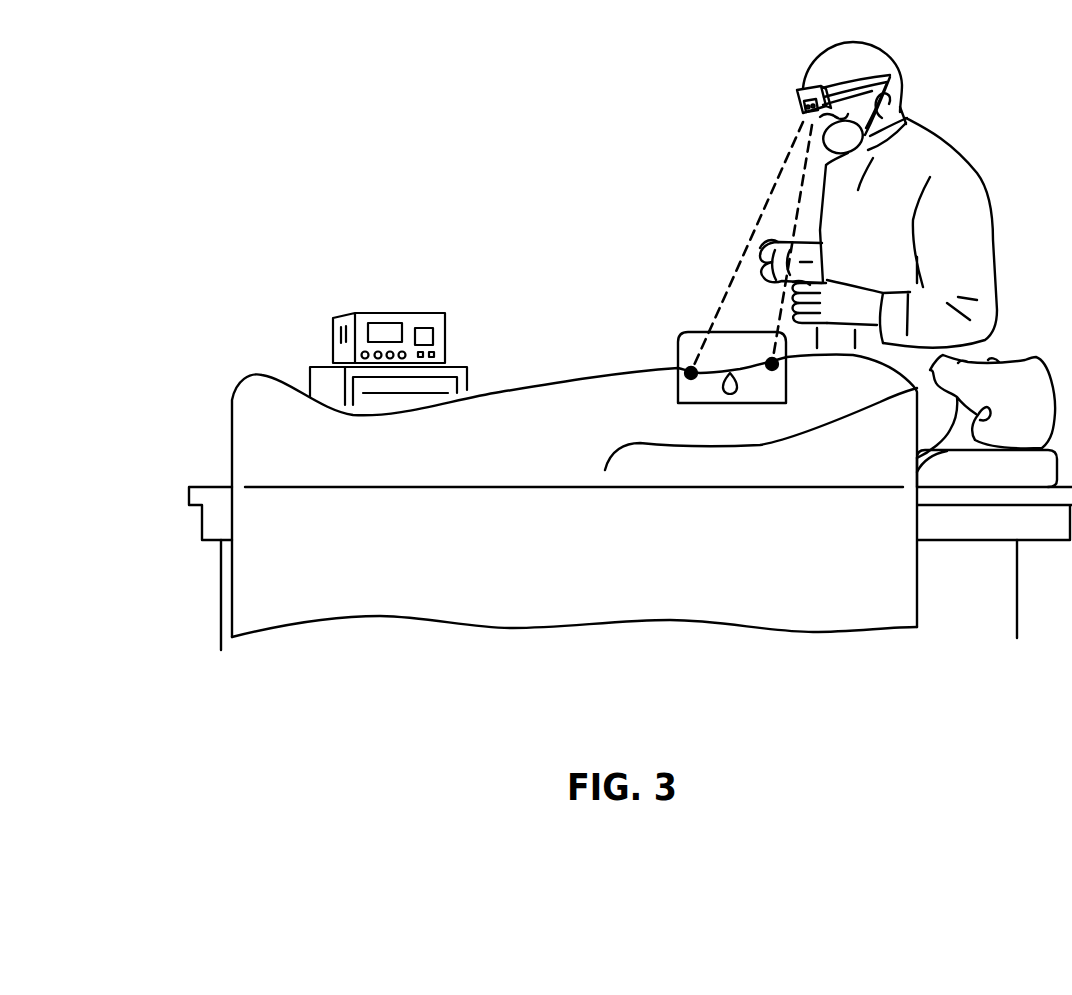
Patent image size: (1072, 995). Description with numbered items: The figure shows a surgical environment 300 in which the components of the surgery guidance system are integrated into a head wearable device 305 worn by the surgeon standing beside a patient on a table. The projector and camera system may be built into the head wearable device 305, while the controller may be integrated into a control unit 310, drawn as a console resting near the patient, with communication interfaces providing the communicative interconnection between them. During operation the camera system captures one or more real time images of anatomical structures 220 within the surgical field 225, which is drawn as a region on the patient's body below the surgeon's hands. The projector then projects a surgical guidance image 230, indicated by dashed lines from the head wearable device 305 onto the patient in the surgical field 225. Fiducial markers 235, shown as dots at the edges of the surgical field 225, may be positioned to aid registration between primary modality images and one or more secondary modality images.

The surgical environment 300 is at (312, 76).
The head wearable device 305 is at (778, 89).
The control unit 310 is at (303, 304).
The surgical guidance image 230 is at (783, 165).
The surgical field 225 is at (718, 330).
The fiducial markers 235 is at (688, 375).
The anatomical structures 220 is at (730, 395).